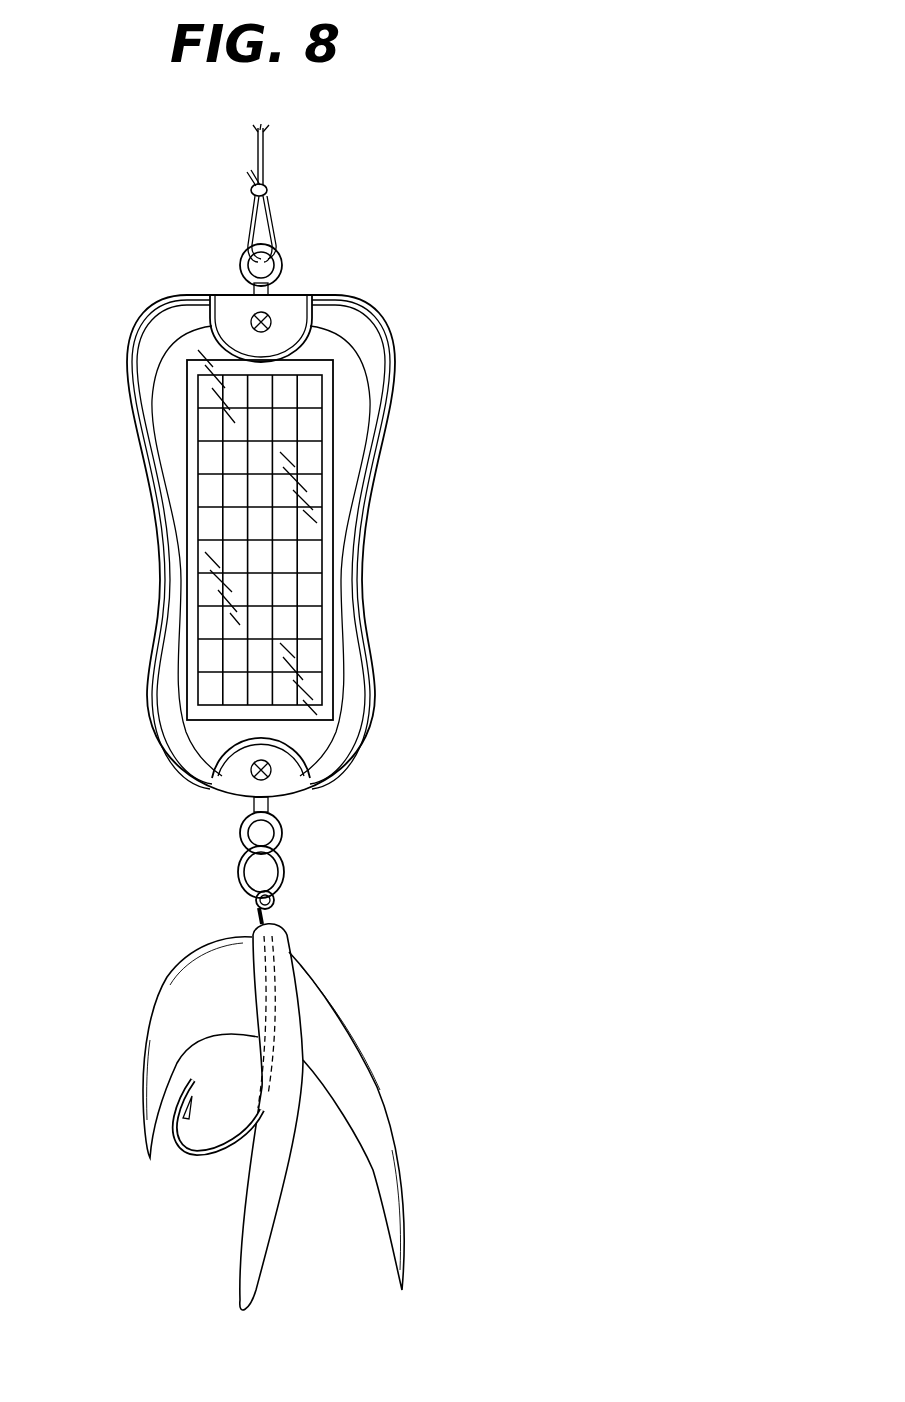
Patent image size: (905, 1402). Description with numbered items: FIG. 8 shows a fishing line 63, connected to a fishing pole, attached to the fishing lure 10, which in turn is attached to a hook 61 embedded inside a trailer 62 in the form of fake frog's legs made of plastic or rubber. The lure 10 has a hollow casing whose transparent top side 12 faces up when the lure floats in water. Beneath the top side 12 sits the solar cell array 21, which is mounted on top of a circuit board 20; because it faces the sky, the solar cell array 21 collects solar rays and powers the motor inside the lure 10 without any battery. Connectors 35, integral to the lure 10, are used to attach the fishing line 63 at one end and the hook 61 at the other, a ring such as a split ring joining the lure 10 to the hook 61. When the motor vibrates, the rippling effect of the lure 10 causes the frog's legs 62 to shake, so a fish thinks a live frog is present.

The fishing lure 10 is at (437, 312).
The top side 12 is at (175, 582).
The circuit board 20 is at (317, 367).
The solar cell array 21 is at (316, 456).
The connectors 35 is at (245, 268).
The hook 61 is at (195, 1153).
The trailer (fake frog's legs) 62 is at (367, 978).
The fishing line 63 is at (265, 143).